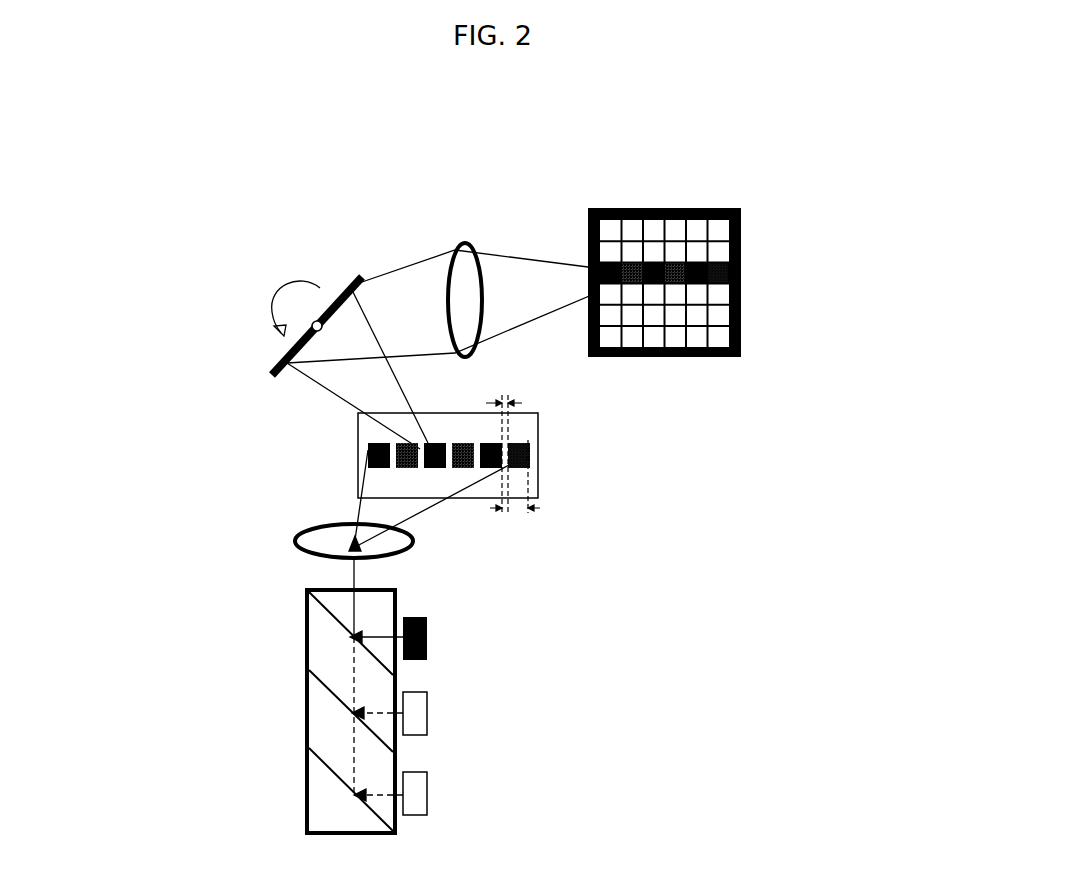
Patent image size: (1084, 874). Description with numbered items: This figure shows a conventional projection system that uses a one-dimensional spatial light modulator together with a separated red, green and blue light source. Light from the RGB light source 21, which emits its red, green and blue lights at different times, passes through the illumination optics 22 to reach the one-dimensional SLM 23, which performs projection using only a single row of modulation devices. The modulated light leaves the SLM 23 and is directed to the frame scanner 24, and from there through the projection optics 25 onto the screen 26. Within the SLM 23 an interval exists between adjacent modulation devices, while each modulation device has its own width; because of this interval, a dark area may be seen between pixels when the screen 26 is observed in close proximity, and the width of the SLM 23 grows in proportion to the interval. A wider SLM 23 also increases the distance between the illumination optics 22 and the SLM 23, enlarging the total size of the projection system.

The RGB light source 21 is at (468, 616).
The illumination optics 22 is at (285, 542).
The 1D SLM 23 is at (538, 455).
The frame scanner 24 is at (270, 280).
The projection optics 25 is at (463, 241).
The screen 26 is at (741, 280).